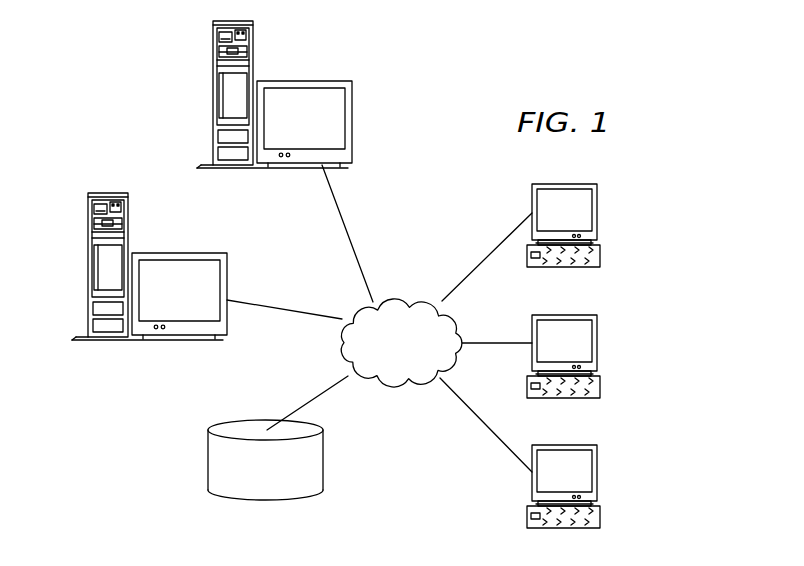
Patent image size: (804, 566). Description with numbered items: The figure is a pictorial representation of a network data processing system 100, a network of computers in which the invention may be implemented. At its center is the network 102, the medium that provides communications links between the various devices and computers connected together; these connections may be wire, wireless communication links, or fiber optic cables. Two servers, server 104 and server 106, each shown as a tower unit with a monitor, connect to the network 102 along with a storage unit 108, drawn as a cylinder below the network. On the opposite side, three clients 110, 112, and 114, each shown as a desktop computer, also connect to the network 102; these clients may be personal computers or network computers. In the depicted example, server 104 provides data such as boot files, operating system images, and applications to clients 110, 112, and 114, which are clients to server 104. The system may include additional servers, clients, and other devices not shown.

The network data processing system 100 is at (472, 87).
The network 102 is at (400, 296).
The server 104 is at (88, 268).
The server 106 is at (213, 96).
The storage unit 108 is at (248, 498).
The client 110 is at (597, 213).
The client 112 is at (597, 343).
The client 114 is at (597, 472).